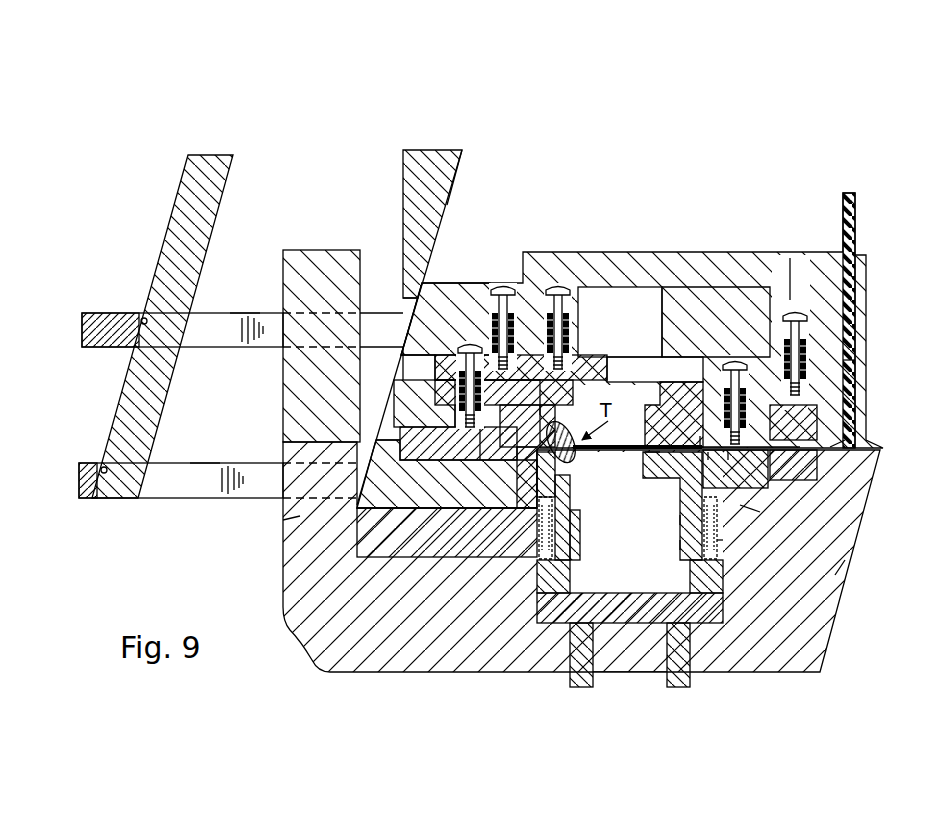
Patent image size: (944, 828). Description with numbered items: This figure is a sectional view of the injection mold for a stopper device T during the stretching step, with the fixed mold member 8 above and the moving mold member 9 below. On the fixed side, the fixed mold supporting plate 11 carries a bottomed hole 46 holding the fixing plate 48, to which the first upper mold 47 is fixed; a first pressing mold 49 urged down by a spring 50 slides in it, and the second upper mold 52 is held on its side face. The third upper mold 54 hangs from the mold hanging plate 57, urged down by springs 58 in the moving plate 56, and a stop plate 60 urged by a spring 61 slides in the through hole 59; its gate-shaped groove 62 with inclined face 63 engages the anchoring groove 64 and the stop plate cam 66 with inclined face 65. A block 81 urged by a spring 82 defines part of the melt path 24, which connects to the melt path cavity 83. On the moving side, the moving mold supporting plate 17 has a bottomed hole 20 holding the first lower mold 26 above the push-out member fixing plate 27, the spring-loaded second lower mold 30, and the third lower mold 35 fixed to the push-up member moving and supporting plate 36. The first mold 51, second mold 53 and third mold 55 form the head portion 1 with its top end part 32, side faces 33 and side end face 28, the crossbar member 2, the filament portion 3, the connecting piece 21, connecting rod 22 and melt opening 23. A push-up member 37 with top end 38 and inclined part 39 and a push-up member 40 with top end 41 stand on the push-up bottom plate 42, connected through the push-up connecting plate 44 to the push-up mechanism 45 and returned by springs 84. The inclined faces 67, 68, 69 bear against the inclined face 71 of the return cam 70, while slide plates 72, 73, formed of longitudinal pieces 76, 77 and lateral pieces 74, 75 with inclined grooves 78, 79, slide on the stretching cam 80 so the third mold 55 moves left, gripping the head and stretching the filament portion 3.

The head portion 1 is at (568, 430).
The crossbar member 2 is at (700, 440).
The filament portion 3 is at (603, 450).
The fixed mold member 8 is at (878, 334).
The moving mold member 9 is at (878, 529).
The fixed mold supporting plate 11 is at (863, 385).
The moving mold supporting plate 17 is at (835, 575).
The bottomed hole 20 is at (355, 382).
The connecting piece 21 is at (710, 455).
The connecting rod 22 is at (730, 455).
The melt opening 23 is at (758, 452).
The melt path 24 is at (790, 481).
The first lower mold 26 is at (758, 512).
The push-out member fixing plate 27 is at (720, 547).
The side end face 28 is at (568, 462).
The second lower mold 30 is at (680, 493).
The top end part 32 is at (540, 463).
The side faces 33 is at (527, 426).
The third lower mold 35 is at (447, 444).
The push-up member moving and supporting plate 36 is at (447, 532).
The push-up member 37 is at (697, 578).
The top end 38 is at (680, 545).
The inclined part 39 is at (680, 520).
The push-up member 40 is at (565, 577).
The top end 41 is at (565, 537).
The push-up bottom plate 42 is at (631, 600).
The push-up connecting plate 44 is at (665, 688).
The push-up mechanism 45 is at (567, 678).
The bottomed hole 46 is at (620, 285).
The first upper mold 47 is at (748, 390).
The fixing plate 48 is at (716, 322).
The first pressing mold 49 is at (707, 440).
The spring 50 is at (798, 362).
The first mold 51 is at (850, 440).
The second upper mold 52 is at (674, 414).
The second mold 53 is at (653, 454).
The third upper mold 54 is at (504, 392).
The third mold 55 is at (540, 446).
The moving plate 56 is at (445, 319).
The mold hanging plate 57 is at (598, 356).
The springs 58 is at (522, 285).
The through hole 59 is at (460, 370).
The stop plate 60 is at (535, 405).
The spring 61 is at (405, 360).
The gate-shaped groove 62 is at (445, 461).
The inclined face 63 is at (545, 430).
The anchoring groove 64 is at (495, 462).
The inclined face 65 is at (455, 410).
The stop plate cam 66 is at (427, 461).
The inclined face 67 is at (410, 302).
The inclined face 68 is at (440, 393).
The inclined face 69 is at (360, 482).
The return cam 70 is at (412, 200).
The inclined face 71 is at (447, 205).
The slide plate 72 is at (241, 312).
The slide plate 73 is at (203, 462).
The lateral piece 74 is at (215, 348).
The lateral piece 75 is at (190, 499).
The longitudinal piece 76 is at (107, 325).
The longitudinal piece 77 is at (82, 463).
The inclined groove 78 is at (142, 318).
The inclined groove 79 is at (104, 463).
The stretching cam 80 is at (170, 227).
The block 81 is at (820, 420).
The spring 82 is at (845, 368).
The melt path cavity 83 is at (856, 302).
The springs 84 is at (538, 538).